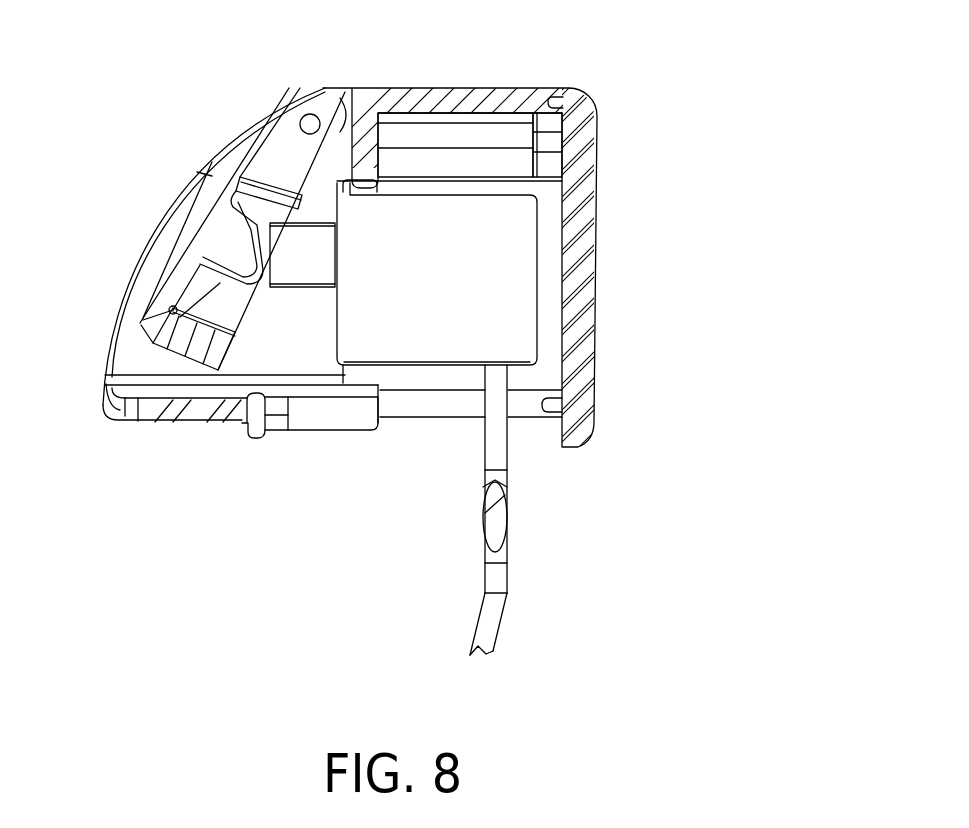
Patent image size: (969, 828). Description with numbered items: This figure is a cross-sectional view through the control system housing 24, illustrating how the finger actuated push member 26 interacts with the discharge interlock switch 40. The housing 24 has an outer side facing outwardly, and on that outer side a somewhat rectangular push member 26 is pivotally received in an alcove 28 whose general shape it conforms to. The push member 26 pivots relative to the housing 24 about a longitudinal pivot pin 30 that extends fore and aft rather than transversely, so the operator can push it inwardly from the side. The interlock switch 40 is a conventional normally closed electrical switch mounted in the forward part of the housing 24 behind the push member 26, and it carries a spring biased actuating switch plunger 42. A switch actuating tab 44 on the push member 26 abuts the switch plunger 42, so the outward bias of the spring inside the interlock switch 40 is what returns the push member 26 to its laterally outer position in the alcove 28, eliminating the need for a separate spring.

The housing 24 is at (476, 235).
The push member 26 is at (247, 153).
The alcove 28 is at (296, 263).
The pivot pin 30 is at (318, 116).
The discharge interlock switch 40 is at (497, 287).
The switch plunger 42 is at (304, 258).
The switch actuating tab 44 is at (143, 326).